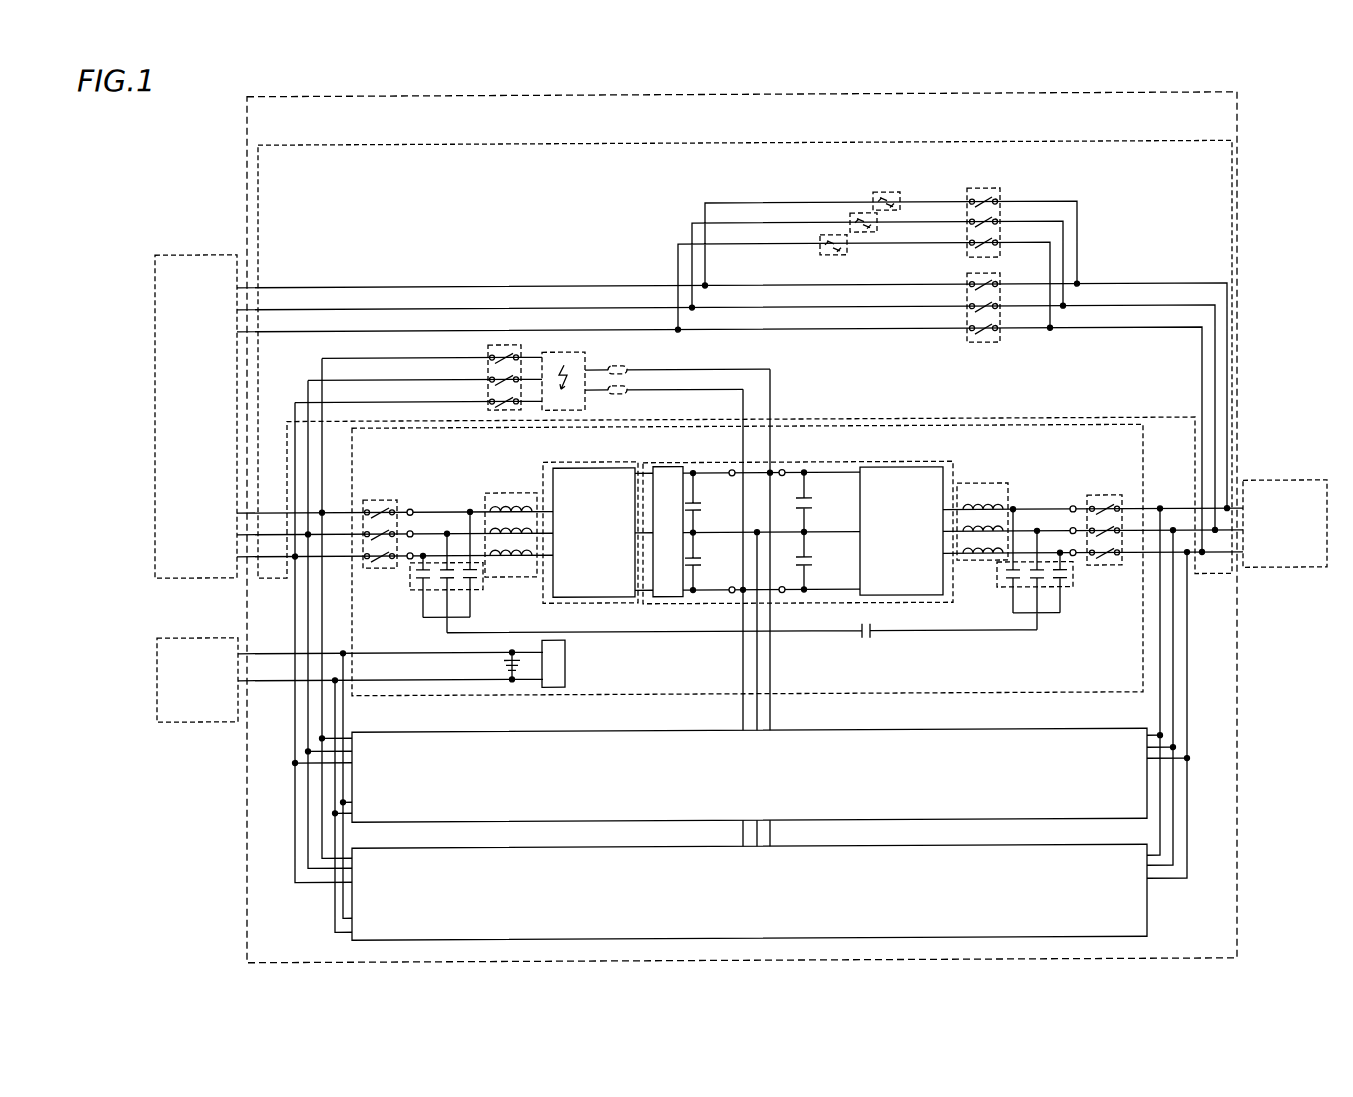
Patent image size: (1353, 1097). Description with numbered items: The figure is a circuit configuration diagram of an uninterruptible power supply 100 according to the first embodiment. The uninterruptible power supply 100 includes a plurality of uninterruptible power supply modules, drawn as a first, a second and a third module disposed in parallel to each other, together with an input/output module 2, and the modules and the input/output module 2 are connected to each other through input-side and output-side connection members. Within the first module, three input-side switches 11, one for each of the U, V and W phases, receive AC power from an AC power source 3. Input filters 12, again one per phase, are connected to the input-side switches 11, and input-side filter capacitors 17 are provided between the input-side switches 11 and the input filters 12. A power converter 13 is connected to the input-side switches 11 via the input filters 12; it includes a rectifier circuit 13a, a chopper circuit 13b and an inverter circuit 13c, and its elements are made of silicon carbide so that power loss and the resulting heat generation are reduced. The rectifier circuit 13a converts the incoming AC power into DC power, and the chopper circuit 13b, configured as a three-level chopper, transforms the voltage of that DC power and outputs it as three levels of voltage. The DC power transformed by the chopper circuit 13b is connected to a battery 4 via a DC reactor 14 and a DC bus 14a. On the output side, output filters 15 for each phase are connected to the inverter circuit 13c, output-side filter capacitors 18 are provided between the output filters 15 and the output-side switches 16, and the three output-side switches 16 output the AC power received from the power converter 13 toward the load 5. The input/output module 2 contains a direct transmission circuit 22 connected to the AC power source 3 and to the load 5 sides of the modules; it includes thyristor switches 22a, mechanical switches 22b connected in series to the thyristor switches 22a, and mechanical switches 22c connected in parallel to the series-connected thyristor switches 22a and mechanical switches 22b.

The uninterruptible power supply 100 is at (247, 112).
The input/output module 2 is at (345, 141).
The AC power source 3 is at (207, 254).
The battery 4 is at (213, 639).
The load 5 is at (1300, 486).
The input-side switch 11 is at (385, 502).
The input filter 12 is at (500, 497).
The power converter 13 is at (630, 466).
The rectifier circuit 13a is at (543, 470).
The chopper circuit 13b is at (683, 466).
The inverter circuit 13c is at (908, 466).
The DC reactor 14 is at (540, 643).
The DC bus 14a is at (387, 653).
The output filter 15 is at (985, 503).
The output-side switch 16 is at (1100, 500).
The input-side filter capacitor 17 is at (413, 595).
The output-side filter capacitor 18 is at (1068, 596).
The direct transmission circuit 22 is at (625, 250).
The thyristor switch 22a is at (873, 202).
The mechanical switch 22b is at (985, 194).
The mechanical switch 22c is at (975, 279).